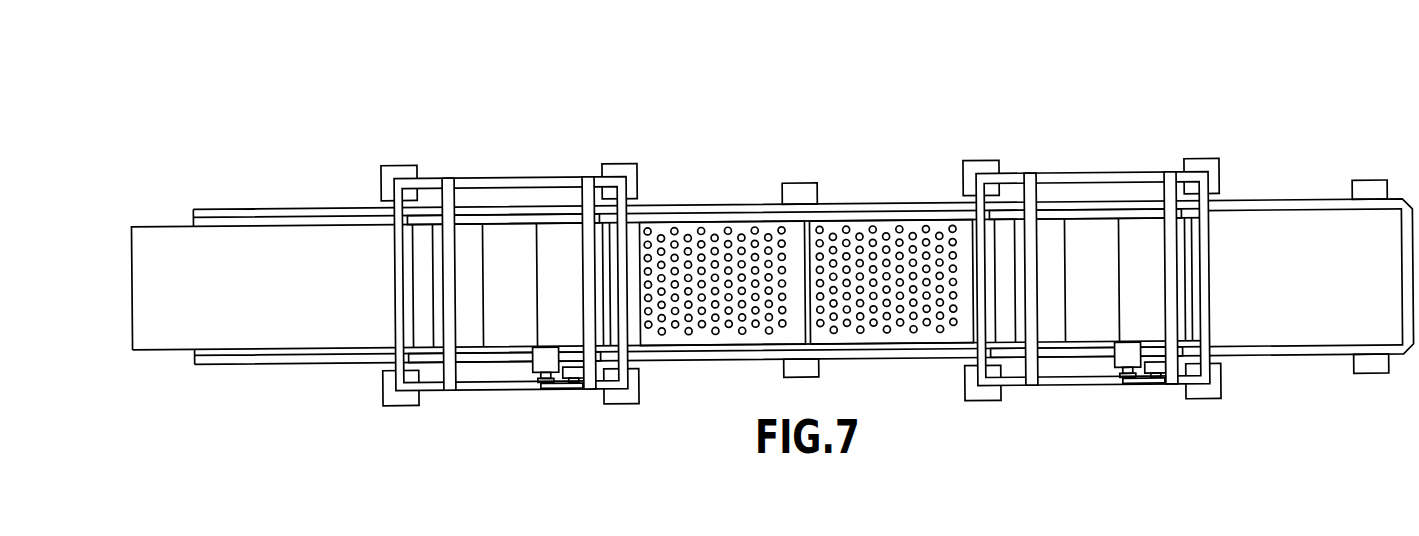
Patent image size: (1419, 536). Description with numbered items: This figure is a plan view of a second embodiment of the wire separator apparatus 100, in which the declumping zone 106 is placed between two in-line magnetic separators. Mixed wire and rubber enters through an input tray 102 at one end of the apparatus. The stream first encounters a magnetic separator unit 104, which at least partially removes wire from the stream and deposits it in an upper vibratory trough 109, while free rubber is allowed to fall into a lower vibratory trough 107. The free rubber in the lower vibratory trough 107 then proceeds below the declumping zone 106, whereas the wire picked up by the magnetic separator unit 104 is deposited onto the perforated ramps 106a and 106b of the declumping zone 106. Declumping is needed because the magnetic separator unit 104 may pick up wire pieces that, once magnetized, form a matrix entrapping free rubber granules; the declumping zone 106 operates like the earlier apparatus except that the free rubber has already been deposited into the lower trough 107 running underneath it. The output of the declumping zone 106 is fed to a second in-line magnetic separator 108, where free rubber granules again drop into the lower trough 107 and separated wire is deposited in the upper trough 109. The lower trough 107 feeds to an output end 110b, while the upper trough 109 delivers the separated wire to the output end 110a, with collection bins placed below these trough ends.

The wire separator apparatus 100 is at (772, 239).
The input tray 102 is at (1322, 228).
The magnetic separator unit 104 is at (1093, 235).
The declumping zone 106 is at (806, 280).
The perforated ramp 106a is at (900, 329).
The perforated ramp 106b is at (702, 327).
The lower vibratory trough 107 is at (267, 351).
The second in-line magnetic separator 108 is at (513, 235).
The upper vibratory trough 109 is at (303, 233).
The output end 110a is at (162, 233).
The output end 110b is at (193, 356).